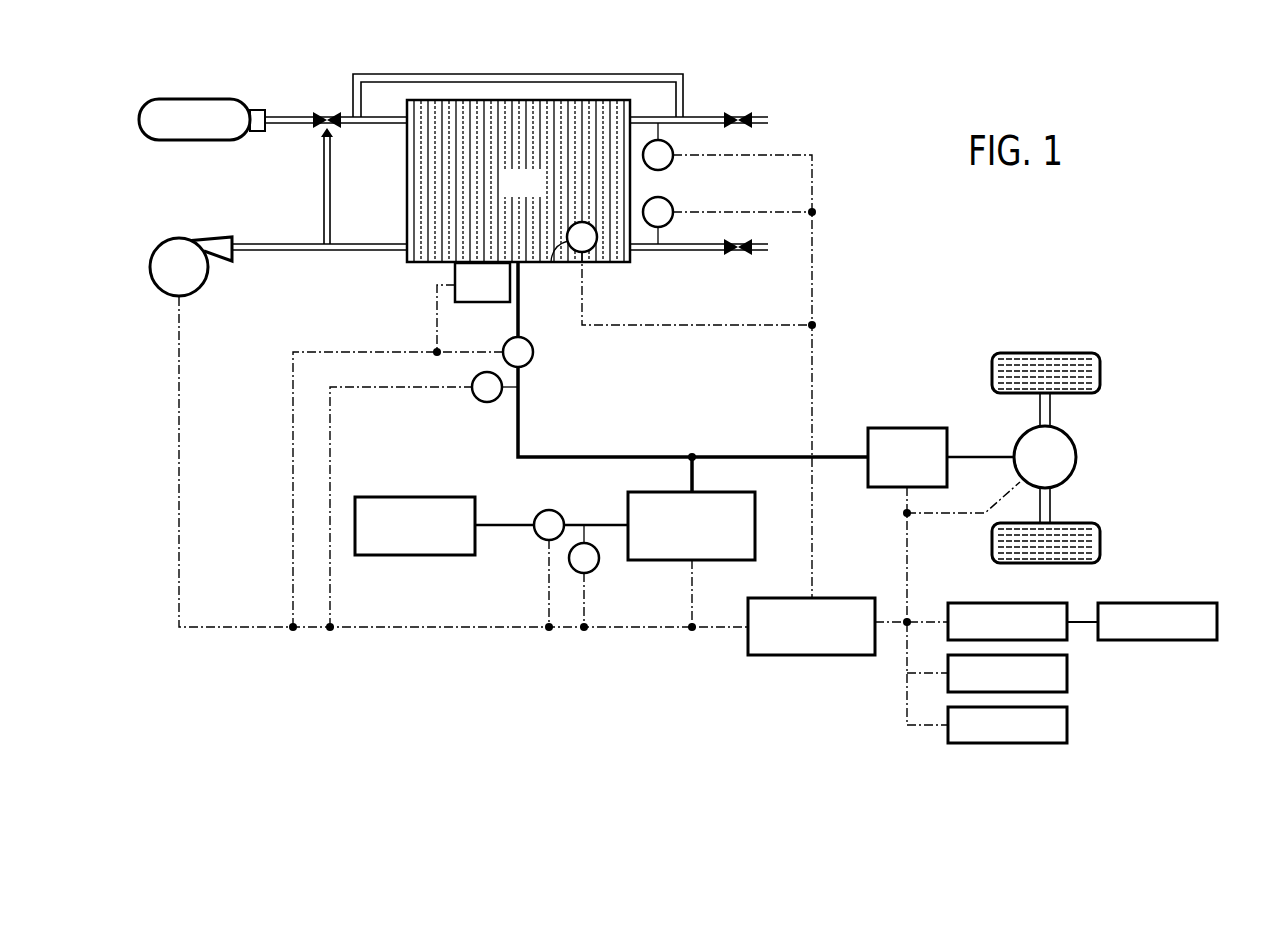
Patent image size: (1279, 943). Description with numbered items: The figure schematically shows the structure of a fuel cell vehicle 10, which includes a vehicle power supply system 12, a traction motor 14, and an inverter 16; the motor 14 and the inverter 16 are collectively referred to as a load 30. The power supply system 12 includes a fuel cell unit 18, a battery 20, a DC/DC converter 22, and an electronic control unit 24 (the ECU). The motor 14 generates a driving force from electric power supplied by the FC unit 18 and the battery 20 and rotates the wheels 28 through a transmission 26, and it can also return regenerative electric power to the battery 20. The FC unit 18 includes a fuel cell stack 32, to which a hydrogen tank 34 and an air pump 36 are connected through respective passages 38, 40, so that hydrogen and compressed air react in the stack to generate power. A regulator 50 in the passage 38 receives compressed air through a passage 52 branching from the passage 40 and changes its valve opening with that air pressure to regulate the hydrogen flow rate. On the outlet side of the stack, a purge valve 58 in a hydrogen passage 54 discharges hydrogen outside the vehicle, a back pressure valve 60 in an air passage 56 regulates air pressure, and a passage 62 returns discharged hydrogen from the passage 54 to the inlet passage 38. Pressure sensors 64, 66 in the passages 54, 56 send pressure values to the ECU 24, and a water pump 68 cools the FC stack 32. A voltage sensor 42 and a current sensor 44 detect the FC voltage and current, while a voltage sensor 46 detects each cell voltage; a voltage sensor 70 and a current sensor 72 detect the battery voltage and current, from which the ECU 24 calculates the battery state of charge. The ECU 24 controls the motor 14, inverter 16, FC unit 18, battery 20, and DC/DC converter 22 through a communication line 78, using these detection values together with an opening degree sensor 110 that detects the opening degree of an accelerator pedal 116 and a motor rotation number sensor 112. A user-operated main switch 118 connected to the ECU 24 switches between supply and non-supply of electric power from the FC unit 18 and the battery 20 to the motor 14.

The fuel cell vehicle 10 is at (889, 96).
The vehicle power supply system 12 is at (832, 169).
The traction motor 14 is at (1018, 438).
The inverter 16 is at (895, 428).
The fuel cell unit 18 is at (277, 64).
The battery 20 is at (440, 497).
The DC/DC converter 22 is at (730, 561).
The electronic control unit 24 is at (853, 598).
The transmission 26 is at (1052, 418).
The wheels 28 is at (1102, 372).
The load 30 is at (978, 393).
The fuel cell stack 32 is at (420, 264).
The hydrogen tank 34 is at (180, 98).
The air pump 36 is at (150, 266).
The passage 38 is at (288, 115).
The passage 40 is at (268, 243).
The voltage sensor 42 is at (487, 403).
The current sensor 44 is at (534, 352).
The voltage sensor 46 is at (552, 265).
The regulator 50 is at (327, 113).
The passage 52 is at (331, 187).
The hydrogen passage 54 is at (698, 116).
The air passage 56 is at (690, 252).
The purge valve 58 is at (738, 112).
The back pressure valve 60 is at (738, 256).
The passage 62 is at (525, 73).
The pressure sensor 64 is at (671, 163).
The pressure sensor 66 is at (671, 204).
The water pump 68 is at (482, 303).
The voltage sensor 70 is at (596, 568).
The current sensor 72 is at (549, 510).
The communication line 78 is at (645, 627).
The opening degree sensor 110 is at (1043, 603).
The motor rotation number sensor 112 is at (1068, 673).
The accelerator pedal 116 is at (1195, 603).
The main switch 118 is at (1068, 725).